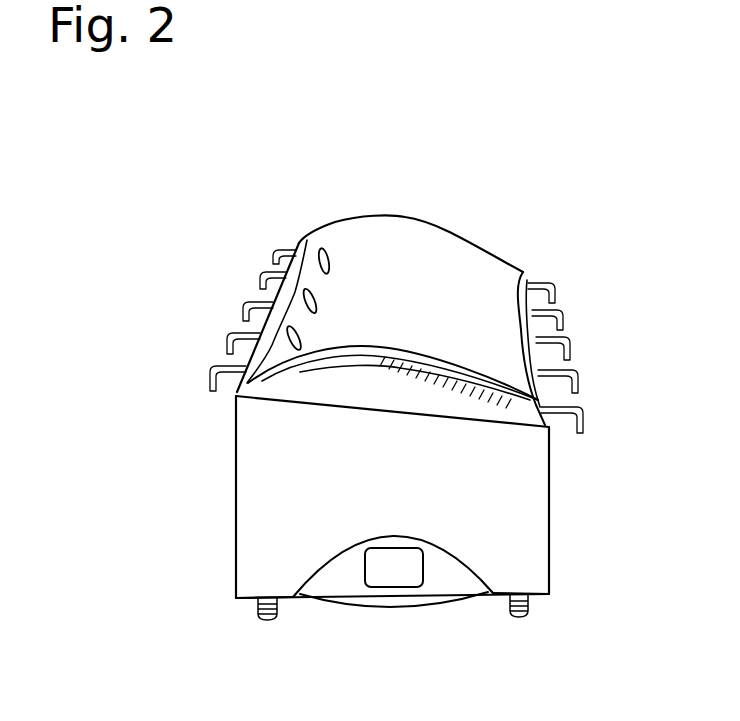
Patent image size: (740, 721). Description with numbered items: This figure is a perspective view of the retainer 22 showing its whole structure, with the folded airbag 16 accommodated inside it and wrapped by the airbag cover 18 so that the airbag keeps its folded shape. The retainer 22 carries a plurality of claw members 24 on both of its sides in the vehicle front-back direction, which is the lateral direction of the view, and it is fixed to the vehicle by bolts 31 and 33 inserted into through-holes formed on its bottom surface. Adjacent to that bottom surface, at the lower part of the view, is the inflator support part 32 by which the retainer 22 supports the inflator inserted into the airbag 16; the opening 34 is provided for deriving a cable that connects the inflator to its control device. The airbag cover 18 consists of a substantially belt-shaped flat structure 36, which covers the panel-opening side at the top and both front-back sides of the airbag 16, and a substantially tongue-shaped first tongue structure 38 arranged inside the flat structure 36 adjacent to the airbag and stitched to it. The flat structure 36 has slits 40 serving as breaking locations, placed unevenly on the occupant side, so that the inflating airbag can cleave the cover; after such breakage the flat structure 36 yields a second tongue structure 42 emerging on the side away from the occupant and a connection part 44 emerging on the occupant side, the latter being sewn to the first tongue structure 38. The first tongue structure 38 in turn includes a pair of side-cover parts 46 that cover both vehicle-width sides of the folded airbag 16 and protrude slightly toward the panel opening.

The airbag 16 is at (433, 373).
The airbag cover 18 is at (483, 272).
The retainer 22 is at (550, 518).
The claw members 24 is at (205, 386).
The bolt 31 is at (267, 622).
The inflator support part 32 is at (393, 607).
The bolt 33 is at (516, 619).
The opening 34 is at (408, 581).
The flat structure 36 is at (297, 167).
The first tongue structure 38 is at (385, 355).
The slits 40 is at (277, 265).
The second tongue structure 42 is at (382, 238).
The connection part 44 is at (317, 237).
The side-cover part 46 is at (297, 386).